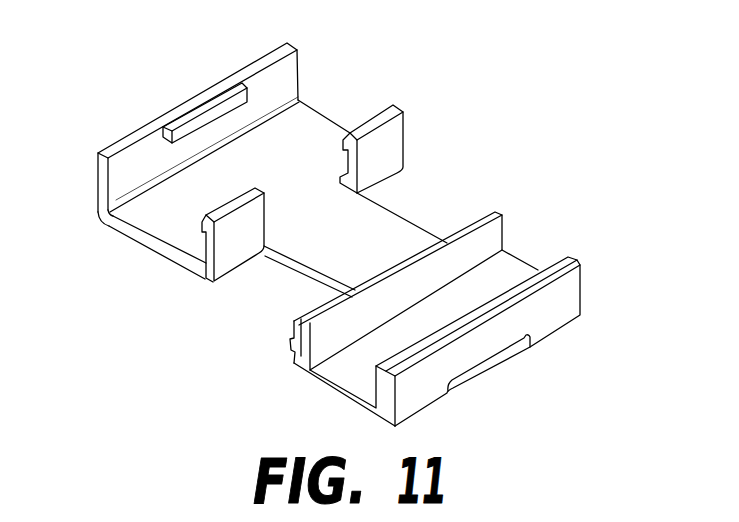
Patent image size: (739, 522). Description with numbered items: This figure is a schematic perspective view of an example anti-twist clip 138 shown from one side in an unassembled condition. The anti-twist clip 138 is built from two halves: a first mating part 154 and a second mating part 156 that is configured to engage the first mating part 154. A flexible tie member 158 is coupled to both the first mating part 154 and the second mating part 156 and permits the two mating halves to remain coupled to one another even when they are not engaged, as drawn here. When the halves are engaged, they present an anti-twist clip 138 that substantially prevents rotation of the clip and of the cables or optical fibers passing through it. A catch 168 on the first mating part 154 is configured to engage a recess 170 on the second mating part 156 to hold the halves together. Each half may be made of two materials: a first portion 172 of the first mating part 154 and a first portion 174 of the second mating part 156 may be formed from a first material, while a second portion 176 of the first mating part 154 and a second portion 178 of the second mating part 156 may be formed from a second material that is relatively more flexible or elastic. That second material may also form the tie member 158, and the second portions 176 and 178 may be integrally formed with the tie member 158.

The anti-twist clip 138 is at (137, 80).
The first mating part 154 is at (270, 56).
The second mating part 156 is at (583, 293).
The flexible tie member 158 is at (403, 226).
The catch 168 is at (213, 102).
The recess 170 is at (487, 360).
The first portion of the first mating part 172 is at (170, 263).
The first portion of the second mating part 174 is at (355, 400).
The second portion of the first mating part 176 is at (155, 232).
The second portion of the second mating part 178 is at (343, 372).